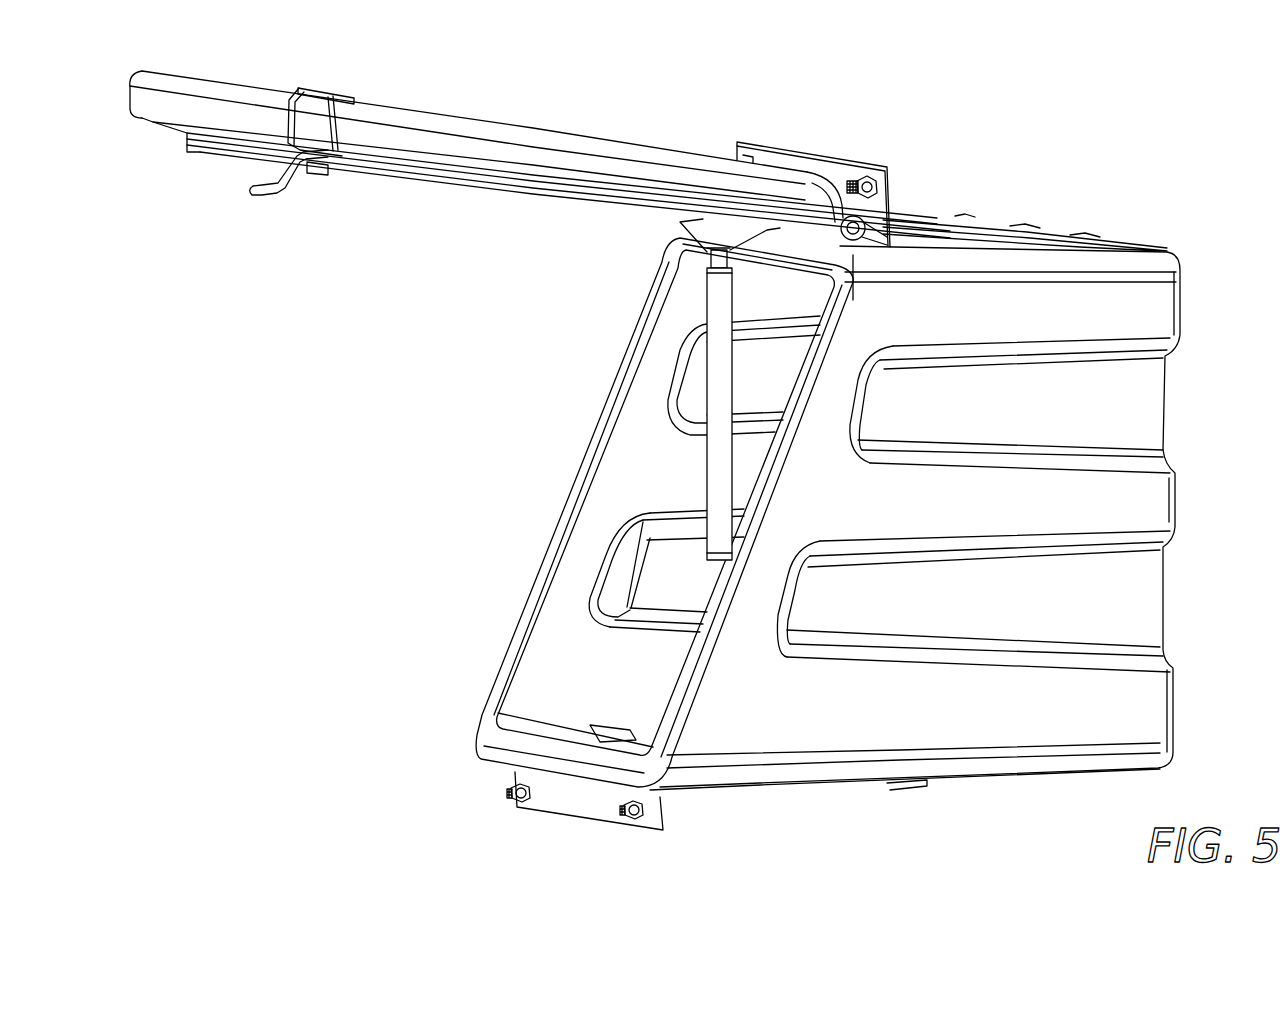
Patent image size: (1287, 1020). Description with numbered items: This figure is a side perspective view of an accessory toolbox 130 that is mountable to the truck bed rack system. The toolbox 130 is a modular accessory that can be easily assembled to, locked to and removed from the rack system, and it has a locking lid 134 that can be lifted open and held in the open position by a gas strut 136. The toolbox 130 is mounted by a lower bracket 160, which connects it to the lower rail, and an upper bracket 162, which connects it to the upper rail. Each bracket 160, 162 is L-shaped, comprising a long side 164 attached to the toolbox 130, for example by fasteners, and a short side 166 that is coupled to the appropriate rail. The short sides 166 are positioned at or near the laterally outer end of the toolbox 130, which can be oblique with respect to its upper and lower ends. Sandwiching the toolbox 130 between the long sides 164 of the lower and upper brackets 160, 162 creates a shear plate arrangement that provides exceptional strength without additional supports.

The tool box 130 is at (1153, 700).
The locking lid 134 is at (438, 117).
The gas strut 136 is at (707, 300).
The lower bracket 160 is at (787, 790).
The upper bracket 162 is at (972, 222).
The long side 164 is at (1045, 237).
The short side 166 is at (838, 154).